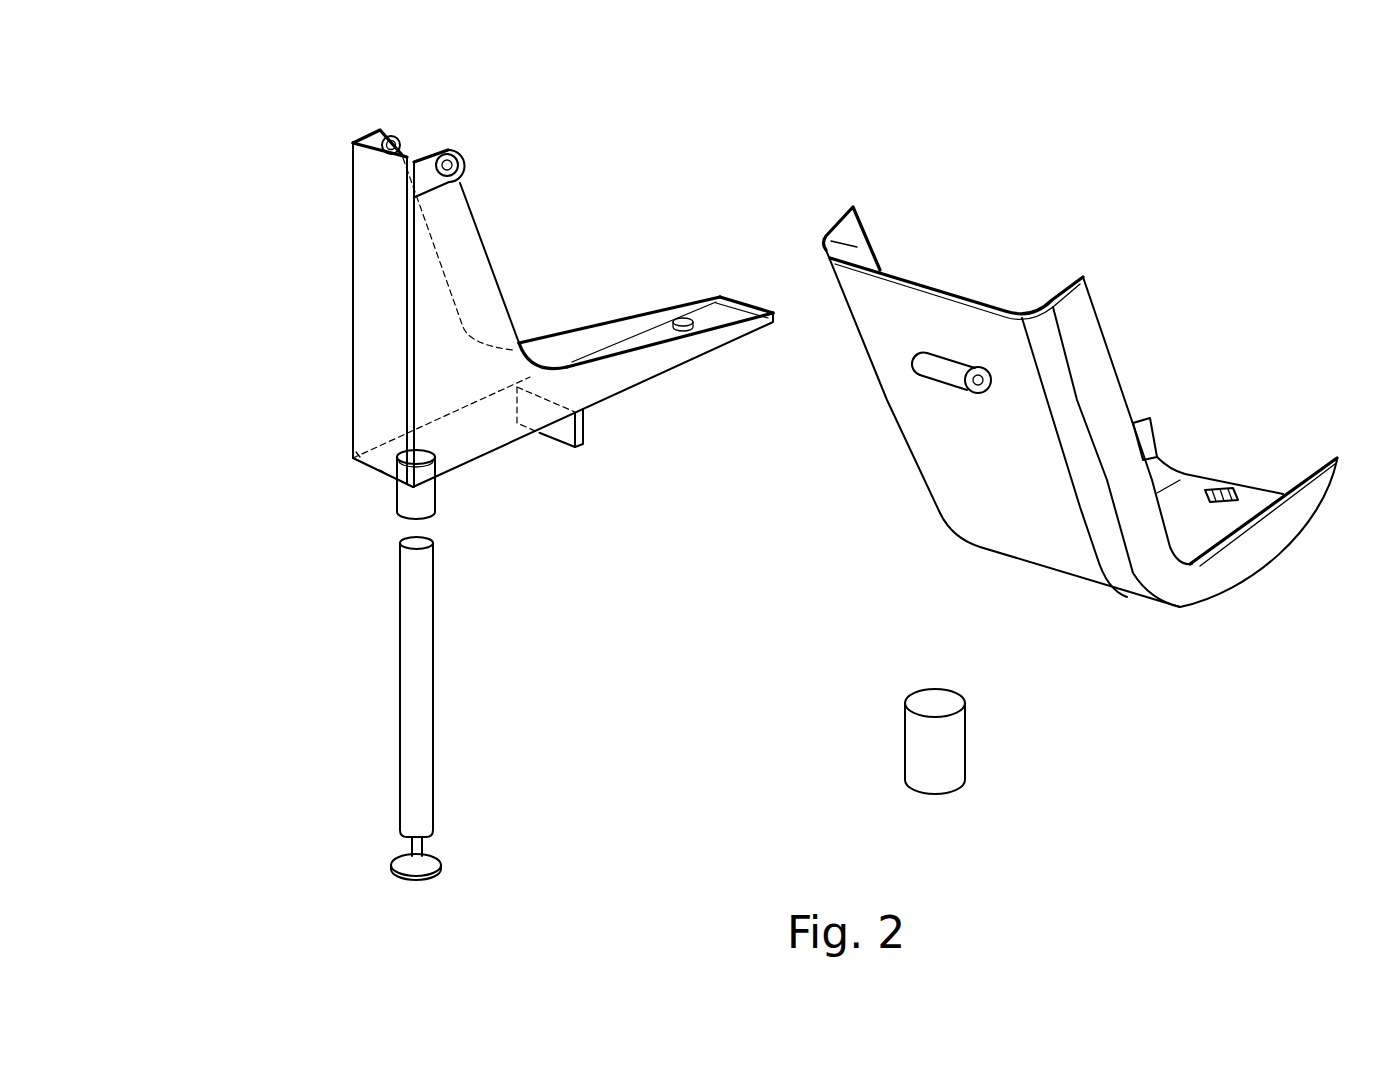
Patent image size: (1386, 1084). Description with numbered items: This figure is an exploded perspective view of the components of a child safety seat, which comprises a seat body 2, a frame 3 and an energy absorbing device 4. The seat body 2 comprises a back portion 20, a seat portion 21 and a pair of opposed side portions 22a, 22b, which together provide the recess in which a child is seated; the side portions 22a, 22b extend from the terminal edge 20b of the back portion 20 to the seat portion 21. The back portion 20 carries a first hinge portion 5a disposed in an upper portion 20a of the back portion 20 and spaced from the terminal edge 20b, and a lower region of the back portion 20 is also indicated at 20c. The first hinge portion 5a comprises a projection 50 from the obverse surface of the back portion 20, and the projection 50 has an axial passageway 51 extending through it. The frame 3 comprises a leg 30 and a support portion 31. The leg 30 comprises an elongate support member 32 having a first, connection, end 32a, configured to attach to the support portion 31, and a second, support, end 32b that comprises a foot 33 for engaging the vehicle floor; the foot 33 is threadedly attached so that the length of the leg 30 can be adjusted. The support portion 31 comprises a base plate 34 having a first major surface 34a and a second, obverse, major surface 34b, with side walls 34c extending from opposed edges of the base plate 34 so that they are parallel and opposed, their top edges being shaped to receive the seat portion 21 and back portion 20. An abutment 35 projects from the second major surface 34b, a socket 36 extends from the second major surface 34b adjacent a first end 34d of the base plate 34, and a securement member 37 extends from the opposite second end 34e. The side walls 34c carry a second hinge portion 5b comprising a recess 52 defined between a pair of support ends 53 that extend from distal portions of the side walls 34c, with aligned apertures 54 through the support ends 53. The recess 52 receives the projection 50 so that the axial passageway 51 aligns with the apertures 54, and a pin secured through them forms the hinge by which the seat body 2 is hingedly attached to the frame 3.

The seat body 2 is at (1190, 200).
The frame 3 is at (247, 380).
The energy absorbing device 4 is at (905, 733).
The first hinge portion 5a is at (923, 360).
The second hinge portion 5b is at (447, 150).
The back portion 20 is at (977, 297).
The upper portion 20a is at (1080, 357).
The terminal edge 20b is at (905, 273).
The bottom panel 20c is at (963, 497).
The seat portion 21 is at (1245, 487).
The side portion 22a is at (1210, 598).
The side portion 22b is at (857, 243).
The leg 30 is at (367, 687).
The support portion 31 is at (322, 245).
The elongate support member 32 is at (433, 645).
The first, connection, end 32a is at (433, 560).
The second, support, end 32b is at (410, 847).
The foot 33 is at (433, 865).
The base plate 34 is at (487, 457).
The first major surface 34a is at (713, 308).
The second, obverse, major surface 34b is at (367, 468).
The side walls 34c is at (527, 346).
The first end 34d is at (367, 453).
The second end 34e is at (733, 303).
The abutment 35 is at (583, 430).
The socket 36 is at (403, 517).
The securement member 37 is at (747, 311).
The projection 50 is at (950, 380).
The axial passageway 51 is at (990, 373).
The recess 52 is at (403, 148).
The support ends 53 is at (370, 136).
The apertures 54 is at (392, 137).